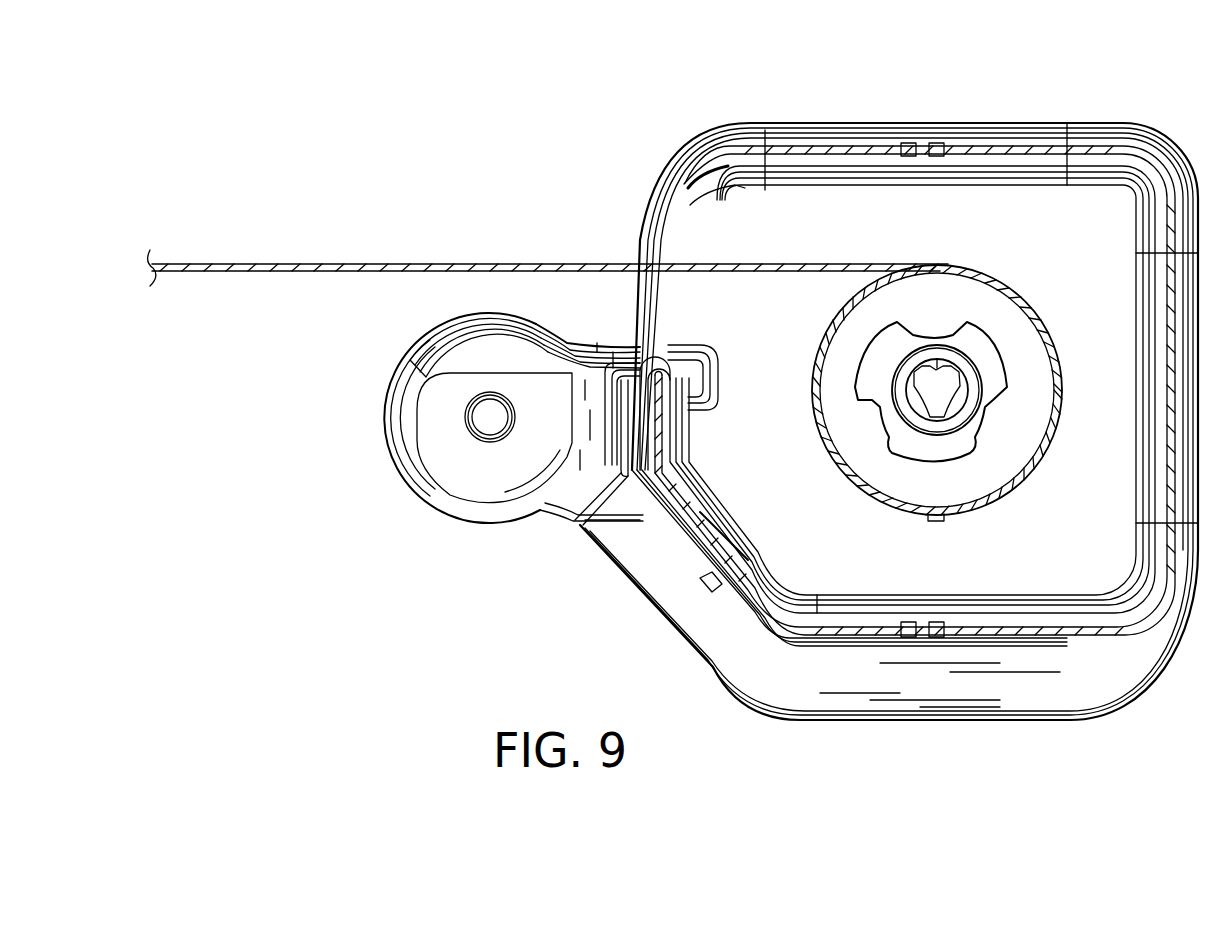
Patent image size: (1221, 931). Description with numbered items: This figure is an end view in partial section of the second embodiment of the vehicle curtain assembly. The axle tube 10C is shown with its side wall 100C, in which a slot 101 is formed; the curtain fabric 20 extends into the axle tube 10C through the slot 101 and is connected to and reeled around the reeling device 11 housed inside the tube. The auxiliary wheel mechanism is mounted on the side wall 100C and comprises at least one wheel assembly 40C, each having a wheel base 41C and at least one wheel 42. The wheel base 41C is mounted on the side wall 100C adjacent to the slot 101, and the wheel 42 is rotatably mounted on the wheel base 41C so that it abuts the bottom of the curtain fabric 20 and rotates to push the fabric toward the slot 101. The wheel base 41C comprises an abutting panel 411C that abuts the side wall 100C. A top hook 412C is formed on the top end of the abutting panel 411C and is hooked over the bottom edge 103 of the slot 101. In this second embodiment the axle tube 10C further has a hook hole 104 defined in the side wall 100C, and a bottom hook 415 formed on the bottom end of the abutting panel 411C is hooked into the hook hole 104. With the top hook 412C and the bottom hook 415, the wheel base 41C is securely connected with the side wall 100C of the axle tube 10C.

The axle tube 10C is at (974, 110).
The side wall 100C is at (680, 517).
The slot 101 is at (672, 212).
The bottom edge of the slot 103 is at (663, 372).
The top hook 412C is at (690, 362).
The abutting panel 411C is at (640, 443).
The hook hole 104 is at (730, 570).
The bottom hook 415 is at (734, 571).
The reeling device 11 is at (986, 327).
The curtain fabric 20 is at (289, 256).
The wheel 42 is at (400, 437).
The wheel assembly 40C is at (428, 508).
The wheel base 41C is at (570, 503).